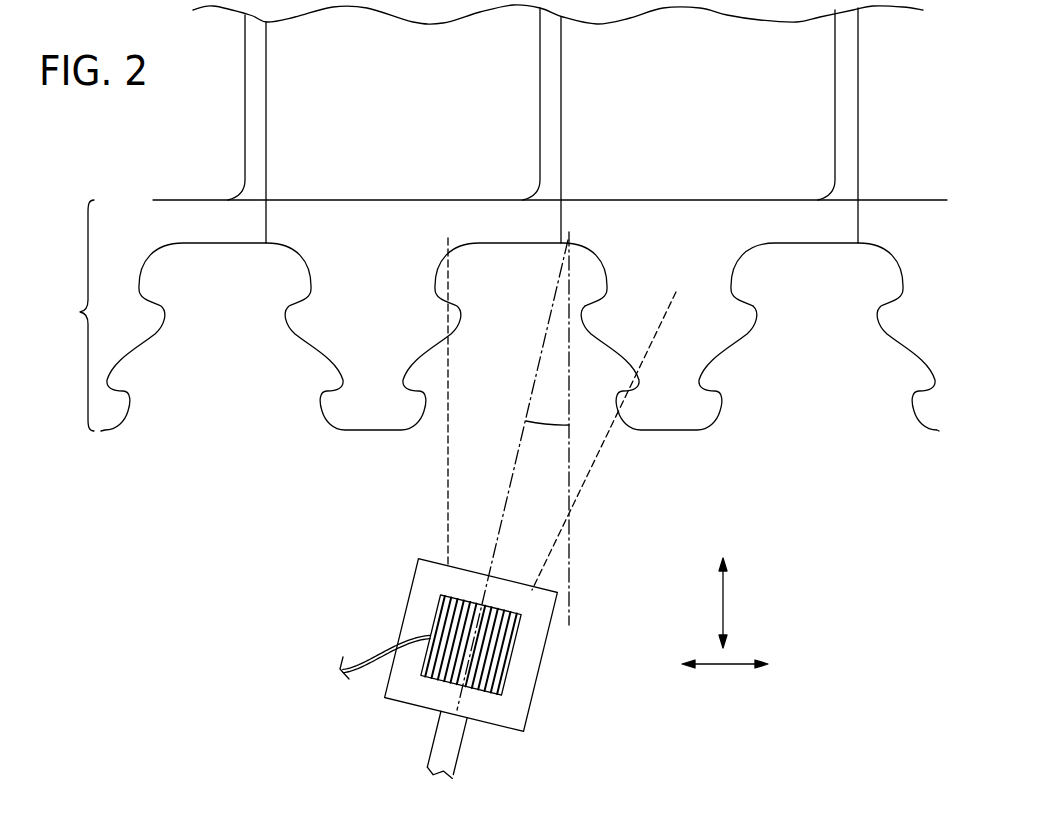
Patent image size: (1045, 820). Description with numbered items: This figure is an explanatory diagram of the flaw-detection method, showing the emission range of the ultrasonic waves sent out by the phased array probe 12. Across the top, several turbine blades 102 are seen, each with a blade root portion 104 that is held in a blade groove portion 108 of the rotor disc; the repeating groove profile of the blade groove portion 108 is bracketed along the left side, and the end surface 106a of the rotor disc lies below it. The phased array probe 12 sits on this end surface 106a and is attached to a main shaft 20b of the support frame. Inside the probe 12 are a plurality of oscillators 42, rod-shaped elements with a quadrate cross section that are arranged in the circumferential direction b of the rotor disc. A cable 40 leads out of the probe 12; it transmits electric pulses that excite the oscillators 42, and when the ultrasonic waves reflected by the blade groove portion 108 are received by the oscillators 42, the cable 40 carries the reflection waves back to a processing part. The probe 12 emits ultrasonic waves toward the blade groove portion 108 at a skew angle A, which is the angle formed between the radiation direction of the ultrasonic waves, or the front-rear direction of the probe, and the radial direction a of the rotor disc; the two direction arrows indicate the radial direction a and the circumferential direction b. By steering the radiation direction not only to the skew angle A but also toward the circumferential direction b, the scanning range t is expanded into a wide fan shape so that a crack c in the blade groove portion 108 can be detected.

The phased array probe 12 is at (535, 690).
The main shaft 20b is at (463, 747).
The cable 40 is at (378, 656).
The oscillator 42 is at (503, 643).
The turbine blade 102 is at (820, 102).
The blade root portion 104 is at (690, 315).
The end surface 106a is at (520, 311).
The blade groove portion 108 is at (486, 311).
The crack c is at (555, 293).
The scanning range t is at (595, 462).
The skew angle A is at (547, 438).
The radial direction a is at (725, 599).
The circumferential direction b is at (722, 668).